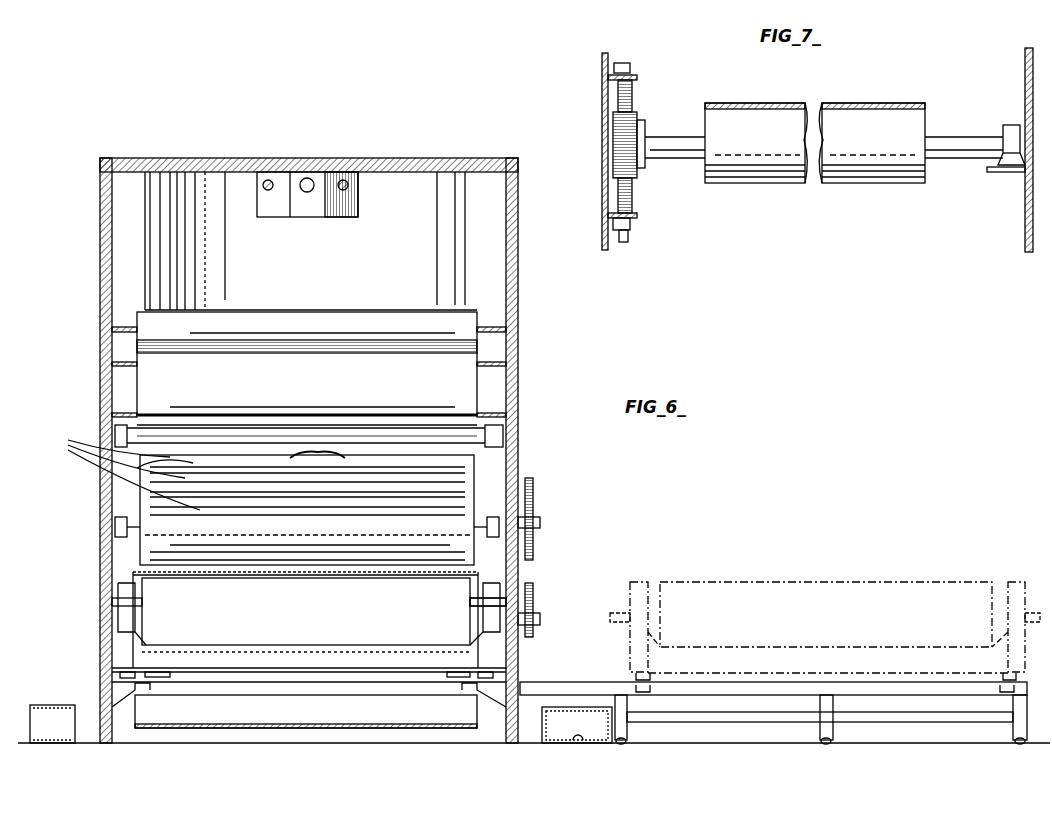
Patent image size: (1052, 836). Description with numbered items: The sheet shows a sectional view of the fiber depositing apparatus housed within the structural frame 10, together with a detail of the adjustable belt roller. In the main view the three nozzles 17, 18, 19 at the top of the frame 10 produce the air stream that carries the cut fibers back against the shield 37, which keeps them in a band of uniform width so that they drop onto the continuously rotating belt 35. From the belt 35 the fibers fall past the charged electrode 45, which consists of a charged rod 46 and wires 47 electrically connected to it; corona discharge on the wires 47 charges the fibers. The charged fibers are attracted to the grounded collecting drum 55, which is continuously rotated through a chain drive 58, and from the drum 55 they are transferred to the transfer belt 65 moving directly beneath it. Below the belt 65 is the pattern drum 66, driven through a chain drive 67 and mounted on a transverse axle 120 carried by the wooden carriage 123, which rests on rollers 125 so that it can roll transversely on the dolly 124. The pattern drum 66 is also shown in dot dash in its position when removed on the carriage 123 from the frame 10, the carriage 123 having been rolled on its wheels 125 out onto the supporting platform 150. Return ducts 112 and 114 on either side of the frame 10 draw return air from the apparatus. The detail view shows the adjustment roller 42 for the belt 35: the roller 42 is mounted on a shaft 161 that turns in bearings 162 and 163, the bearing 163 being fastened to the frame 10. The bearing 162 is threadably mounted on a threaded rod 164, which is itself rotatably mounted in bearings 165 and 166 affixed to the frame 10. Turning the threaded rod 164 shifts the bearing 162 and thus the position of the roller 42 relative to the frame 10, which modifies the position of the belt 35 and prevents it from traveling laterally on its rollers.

In FIG. 6, the structural frame 10 is at (530, 280).
In FIG. 7, the structural frame 10 is at (590, 95).
In FIG. 6, the nozzle 17 is at (349, 187).
In FIG. 6, the nozzle 18 is at (307, 178).
In FIG. 6, the nozzle 19 is at (262, 186).
In FIG. 6, the belt 35 is at (145, 318).
In FIG. 7, the belt 35 is at (860, 103).
In FIG. 6, the shield 37 is at (195, 236).
In FIG. 7, the idler roller 42 is at (860, 168).
In FIG. 6, the charged electrode 45 is at (321, 445).
In FIG. 6, the charged rod 46 is at (258, 435).
In FIG. 6, the wires 47 is at (68, 443).
In FIG. 6, the collecting drum 55 is at (152, 548).
In FIG. 6, the chain drive 58 is at (533, 486).
In FIG. 6, the transfer belt 65 is at (290, 576).
In FIG. 6, the pattern drum 66 is at (140, 598).
In FIG. 6, the chain drive 67 is at (533, 594).
In FIG. 6, the return duct 112 is at (47, 703).
In FIG. 6, the return duct 114 is at (578, 745).
In FIG. 6, the transverse axle 120 is at (486, 605).
In FIG. 6, the carriage 123 is at (325, 642).
In FIG. 6, the dolly 124 is at (283, 686).
In FIG. 6, the roller 125 is at (143, 690).
In FIG. 6, the supporting platform 150 is at (795, 728).
In FIG. 7, the shaft 161 is at (691, 155).
In FIG. 7, the bearing 162 is at (641, 128).
In FIG. 7, the bearing 163 is at (1010, 125).
In FIG. 7, the threaded rod 164 is at (632, 92).
In FIG. 7, the bearing 165 is at (620, 62).
In FIG. 7, the bearing 166 is at (623, 242).